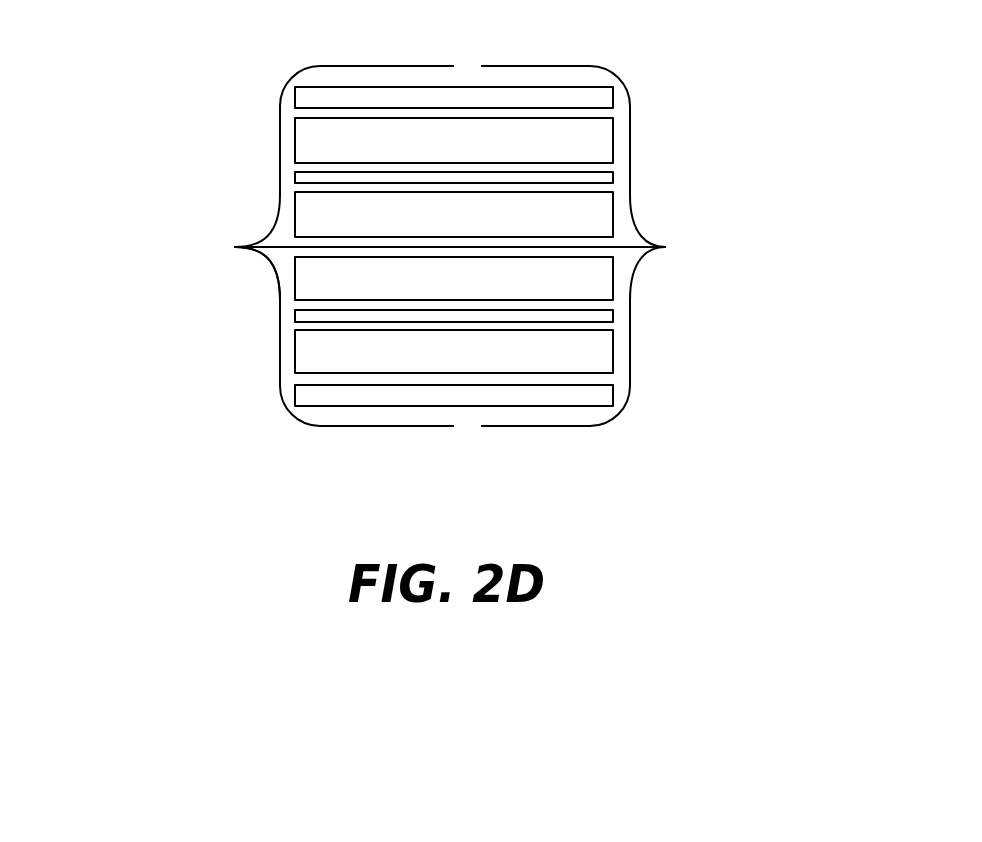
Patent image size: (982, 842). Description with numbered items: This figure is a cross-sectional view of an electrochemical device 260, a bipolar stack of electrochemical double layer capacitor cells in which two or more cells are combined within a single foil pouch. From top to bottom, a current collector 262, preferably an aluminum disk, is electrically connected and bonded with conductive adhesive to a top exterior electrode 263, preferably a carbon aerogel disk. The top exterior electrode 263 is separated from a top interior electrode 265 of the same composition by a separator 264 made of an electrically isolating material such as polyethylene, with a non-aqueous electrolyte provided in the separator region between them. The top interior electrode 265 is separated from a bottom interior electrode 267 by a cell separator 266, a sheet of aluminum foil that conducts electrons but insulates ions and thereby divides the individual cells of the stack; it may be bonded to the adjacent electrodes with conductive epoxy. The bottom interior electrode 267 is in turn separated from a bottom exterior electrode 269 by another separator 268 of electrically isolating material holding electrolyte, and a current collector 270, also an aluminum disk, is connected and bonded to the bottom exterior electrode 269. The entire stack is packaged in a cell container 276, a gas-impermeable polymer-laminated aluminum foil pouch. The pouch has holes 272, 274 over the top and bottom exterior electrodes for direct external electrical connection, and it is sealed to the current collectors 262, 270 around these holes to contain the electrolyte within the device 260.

The electrochemical device 260 is at (210, 131).
The current collector 262 is at (605, 93).
The top exterior electrode 263 is at (598, 133).
The separator 264 is at (605, 175).
The top interior electrode 265 is at (598, 212).
The cell separator 266 is at (665, 247).
The bottom interior electrode 267 is at (608, 275).
The separator 268 is at (610, 313).
The bottom exterior electrode 269 is at (610, 348).
The current collector 270 is at (608, 390).
The hole 272 is at (463, 64).
The hole 274 is at (465, 424).
The cell container 276 is at (275, 273).